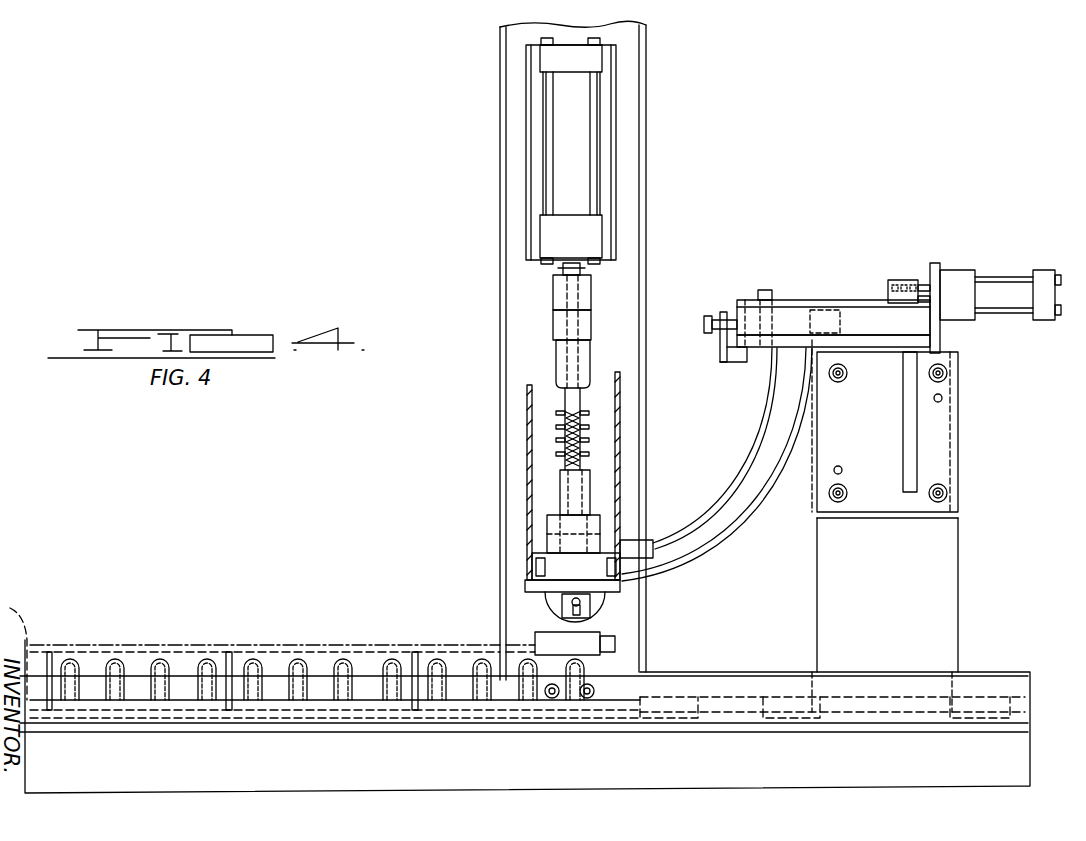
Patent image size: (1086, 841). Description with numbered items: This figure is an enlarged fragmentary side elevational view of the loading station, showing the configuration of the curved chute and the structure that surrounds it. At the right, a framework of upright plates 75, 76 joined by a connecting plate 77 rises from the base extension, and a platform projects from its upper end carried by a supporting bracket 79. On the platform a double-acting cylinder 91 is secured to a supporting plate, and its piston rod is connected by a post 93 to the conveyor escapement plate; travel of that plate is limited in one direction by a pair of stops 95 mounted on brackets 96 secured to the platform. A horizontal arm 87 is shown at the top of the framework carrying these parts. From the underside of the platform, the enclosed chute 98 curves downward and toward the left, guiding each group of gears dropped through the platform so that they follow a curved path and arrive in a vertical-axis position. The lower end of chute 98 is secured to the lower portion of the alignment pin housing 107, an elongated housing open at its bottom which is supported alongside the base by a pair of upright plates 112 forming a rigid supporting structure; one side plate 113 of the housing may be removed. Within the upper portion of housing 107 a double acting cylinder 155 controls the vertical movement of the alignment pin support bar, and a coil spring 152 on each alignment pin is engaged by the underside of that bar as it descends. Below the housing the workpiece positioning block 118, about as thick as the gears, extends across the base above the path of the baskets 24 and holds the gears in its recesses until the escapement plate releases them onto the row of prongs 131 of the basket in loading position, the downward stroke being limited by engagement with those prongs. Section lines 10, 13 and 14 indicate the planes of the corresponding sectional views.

The double acting cylinder 155 is at (570, 143).
The upright plates 112 is at (498, 268).
The side plate 113 is at (527, 408).
The alignment pin housing 107 is at (620, 420).
The coil spring 152 is at (590, 455).
The workpiece positioning block 118 is at (545, 552).
The horizontal arm 87 is at (818, 300).
The post 93 is at (900, 278).
The double-acting cylinder 91 is at (990, 283).
The stops 95 is at (718, 335).
The brackets 96 is at (735, 360).
The supporting bracket 79 is at (903, 400).
The connecting plate 77 is at (935, 446).
The enclosed chute 98 is at (715, 525).
The upright plate 76 is at (958, 576).
The upright plate 75 is at (818, 577).
The baskets 24 is at (75, 646).
The prongs 131 is at (250, 660).
The section line 10 is at (825, 262).
The section line 13 is at (463, 548).
The section line 14 is at (510, 607).